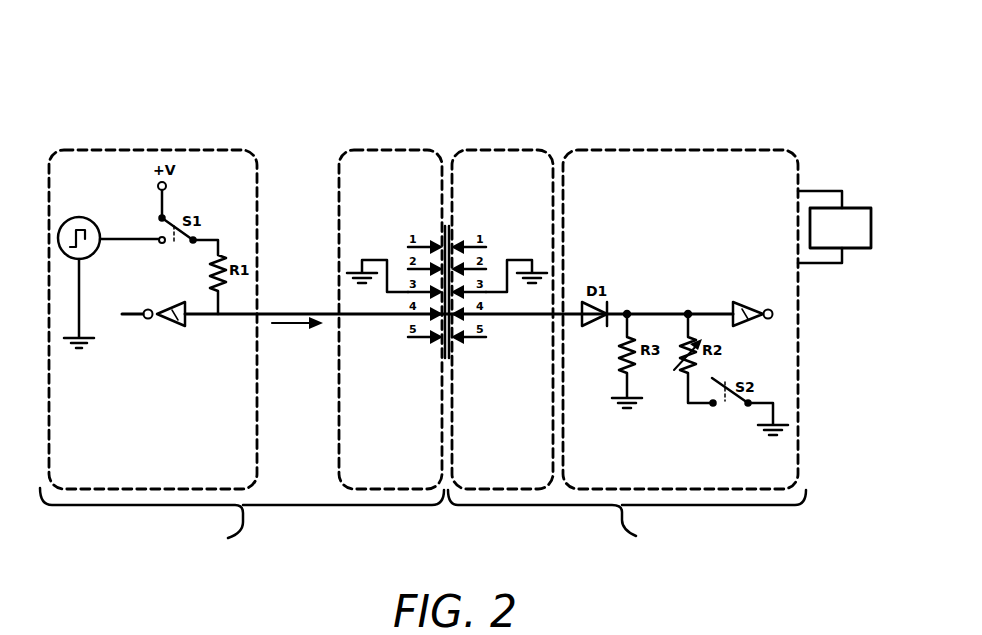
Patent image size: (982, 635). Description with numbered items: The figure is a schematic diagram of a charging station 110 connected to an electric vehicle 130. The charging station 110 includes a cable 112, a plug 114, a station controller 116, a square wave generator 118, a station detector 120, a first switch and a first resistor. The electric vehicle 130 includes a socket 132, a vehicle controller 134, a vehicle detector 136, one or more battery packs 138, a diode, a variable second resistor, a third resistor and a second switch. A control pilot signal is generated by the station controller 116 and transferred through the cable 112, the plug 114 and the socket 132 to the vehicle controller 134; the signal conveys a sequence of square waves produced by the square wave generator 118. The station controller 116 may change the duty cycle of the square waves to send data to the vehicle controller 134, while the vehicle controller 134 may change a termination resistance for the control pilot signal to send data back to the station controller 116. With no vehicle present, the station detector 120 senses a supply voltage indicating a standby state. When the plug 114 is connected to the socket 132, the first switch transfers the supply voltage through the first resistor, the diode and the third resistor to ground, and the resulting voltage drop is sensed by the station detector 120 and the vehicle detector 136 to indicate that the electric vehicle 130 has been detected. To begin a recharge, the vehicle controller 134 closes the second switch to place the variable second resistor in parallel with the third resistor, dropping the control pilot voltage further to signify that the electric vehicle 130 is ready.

The charging station 110 is at (158, 48).
The cable 112 is at (311, 313).
The plug 114 is at (392, 150).
The station controller 116 is at (152, 150).
The square wave generator 118 is at (97, 252).
The station detector 120 is at (170, 326).
The electric vehicle 130 is at (715, 76).
The socket 132 is at (512, 150).
The vehicle controller 134 is at (685, 150).
The vehicle detector 136 is at (748, 302).
The battery pack 138 is at (858, 206).